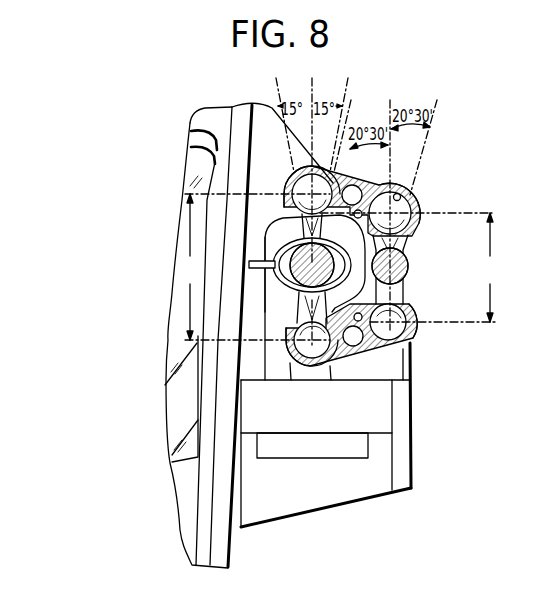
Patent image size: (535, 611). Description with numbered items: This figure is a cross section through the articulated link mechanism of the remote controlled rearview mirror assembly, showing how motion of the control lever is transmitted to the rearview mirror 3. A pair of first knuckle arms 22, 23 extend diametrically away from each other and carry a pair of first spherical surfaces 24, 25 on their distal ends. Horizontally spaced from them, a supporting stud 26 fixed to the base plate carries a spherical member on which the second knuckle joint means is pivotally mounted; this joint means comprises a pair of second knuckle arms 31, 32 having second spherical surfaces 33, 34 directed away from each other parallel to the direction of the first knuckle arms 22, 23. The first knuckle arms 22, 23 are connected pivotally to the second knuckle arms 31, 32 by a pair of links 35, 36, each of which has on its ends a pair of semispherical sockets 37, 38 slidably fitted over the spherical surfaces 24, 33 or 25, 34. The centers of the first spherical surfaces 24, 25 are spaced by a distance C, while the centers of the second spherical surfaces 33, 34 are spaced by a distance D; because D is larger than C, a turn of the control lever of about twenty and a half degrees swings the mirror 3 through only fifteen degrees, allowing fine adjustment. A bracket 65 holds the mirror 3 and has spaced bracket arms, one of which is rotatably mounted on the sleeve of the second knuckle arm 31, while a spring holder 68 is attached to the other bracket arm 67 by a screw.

The rearview mirror 3 is at (167, 387).
The bracket 65 is at (203, 123).
The second spherical surface 33 is at (283, 178).
The semispherical socket 38 is at (298, 174).
The second knuckle arm 31 is at (300, 226).
The supporting stud 26 is at (262, 262).
The second knuckle arm 32 is at (300, 313).
The second spherical surface 34 is at (311, 372).
The link 36 is at (342, 372).
The link 35 is at (342, 172).
The semispherical socket 37 is at (404, 194).
The first spherical surface 24 is at (412, 206).
The first knuckle arm 22 is at (406, 243).
The first knuckle arm 23 is at (408, 283).
The first spherical surface 25 is at (422, 334).
The bracket arm 67 is at (385, 420).
The spring holder 68 is at (283, 458).
The distance D is at (189, 267).
The distance C is at (485, 267).